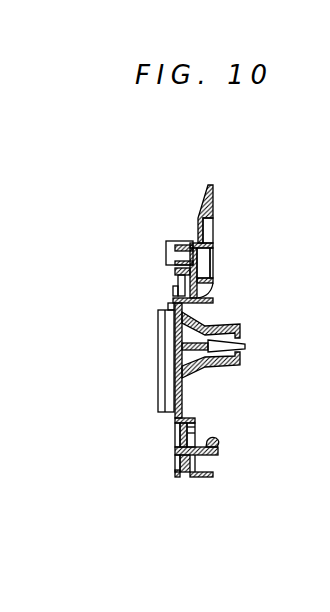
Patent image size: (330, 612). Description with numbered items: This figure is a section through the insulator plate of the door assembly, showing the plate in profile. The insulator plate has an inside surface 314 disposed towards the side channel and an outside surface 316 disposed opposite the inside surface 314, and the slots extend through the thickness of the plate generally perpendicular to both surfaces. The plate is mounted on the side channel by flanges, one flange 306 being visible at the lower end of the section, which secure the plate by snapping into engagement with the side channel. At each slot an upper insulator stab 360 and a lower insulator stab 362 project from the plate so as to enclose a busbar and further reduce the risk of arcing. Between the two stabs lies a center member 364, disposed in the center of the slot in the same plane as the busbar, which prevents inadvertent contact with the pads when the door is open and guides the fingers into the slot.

The flange 306 is at (216, 442).
The inside surface 314 is at (200, 265).
The outside surface 316 is at (182, 286).
The upper insulator stab 360 is at (240, 326).
The lower insulator stab 362 is at (237, 366).
The center member 364 is at (245, 346).